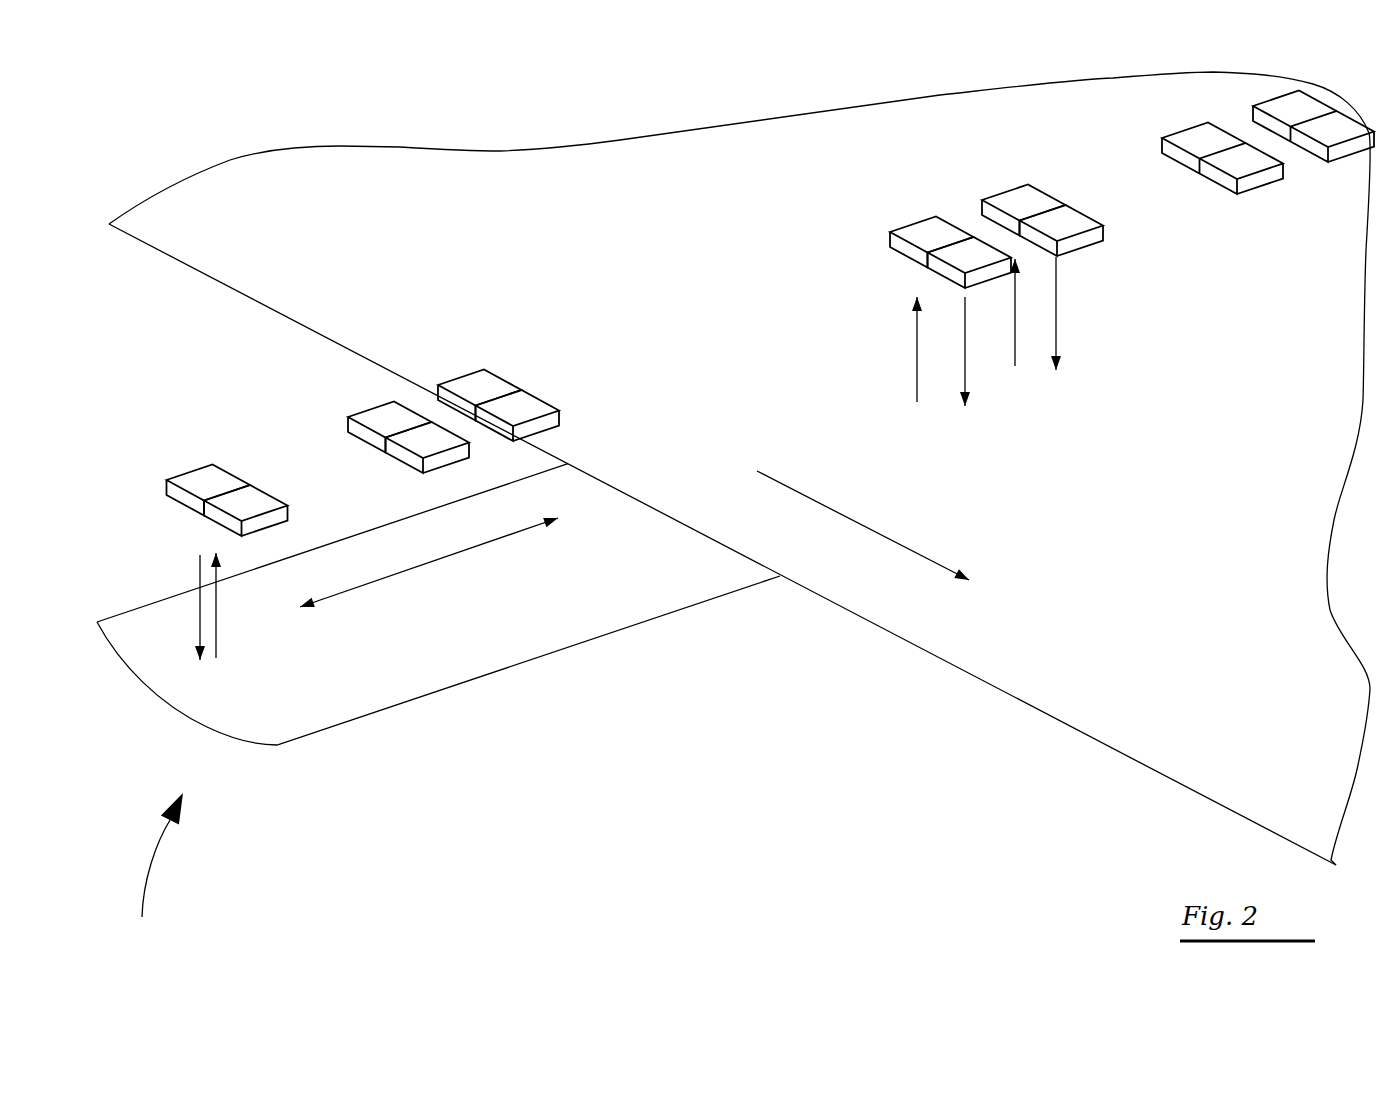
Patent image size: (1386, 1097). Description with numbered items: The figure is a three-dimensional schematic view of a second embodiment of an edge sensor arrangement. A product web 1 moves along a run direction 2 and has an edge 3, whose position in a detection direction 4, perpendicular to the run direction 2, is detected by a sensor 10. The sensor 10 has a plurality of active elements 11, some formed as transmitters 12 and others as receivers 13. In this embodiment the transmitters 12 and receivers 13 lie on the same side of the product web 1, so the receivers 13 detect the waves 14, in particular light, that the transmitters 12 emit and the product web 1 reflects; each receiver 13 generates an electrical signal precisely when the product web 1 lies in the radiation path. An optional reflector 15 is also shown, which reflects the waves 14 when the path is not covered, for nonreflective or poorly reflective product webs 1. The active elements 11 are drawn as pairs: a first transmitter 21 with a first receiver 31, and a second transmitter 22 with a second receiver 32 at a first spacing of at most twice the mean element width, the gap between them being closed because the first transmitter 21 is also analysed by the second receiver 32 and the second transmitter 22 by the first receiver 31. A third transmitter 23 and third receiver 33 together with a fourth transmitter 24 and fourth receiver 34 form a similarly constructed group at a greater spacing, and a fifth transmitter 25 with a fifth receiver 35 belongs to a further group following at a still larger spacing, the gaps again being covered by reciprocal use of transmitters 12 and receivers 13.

The product web 1 is at (247, 190).
The run direction 2 is at (847, 519).
The edge 3 is at (917, 650).
The detection direction 4 is at (387, 583).
The sensor 10 is at (154, 871).
The active elements 11 is at (213, 483).
The transmitters 12 is at (373, 432).
The receivers 13 is at (553, 482).
The waves 14 is at (220, 602).
The reflector 15 is at (598, 632).
The first transmitter 21 is at (205, 486).
The second transmitter 22 is at (389, 428).
The third transmitter 23 is at (483, 393).
The fourth transmitter 24 is at (935, 230).
The fifth transmitter 25 is at (1028, 192).
The first receiver 31 is at (256, 493).
The second receiver 32 is at (429, 437).
The third receiver 33 is at (529, 405).
The fourth receiver 34 is at (980, 250).
The fifth receiver 35 is at (1075, 202).